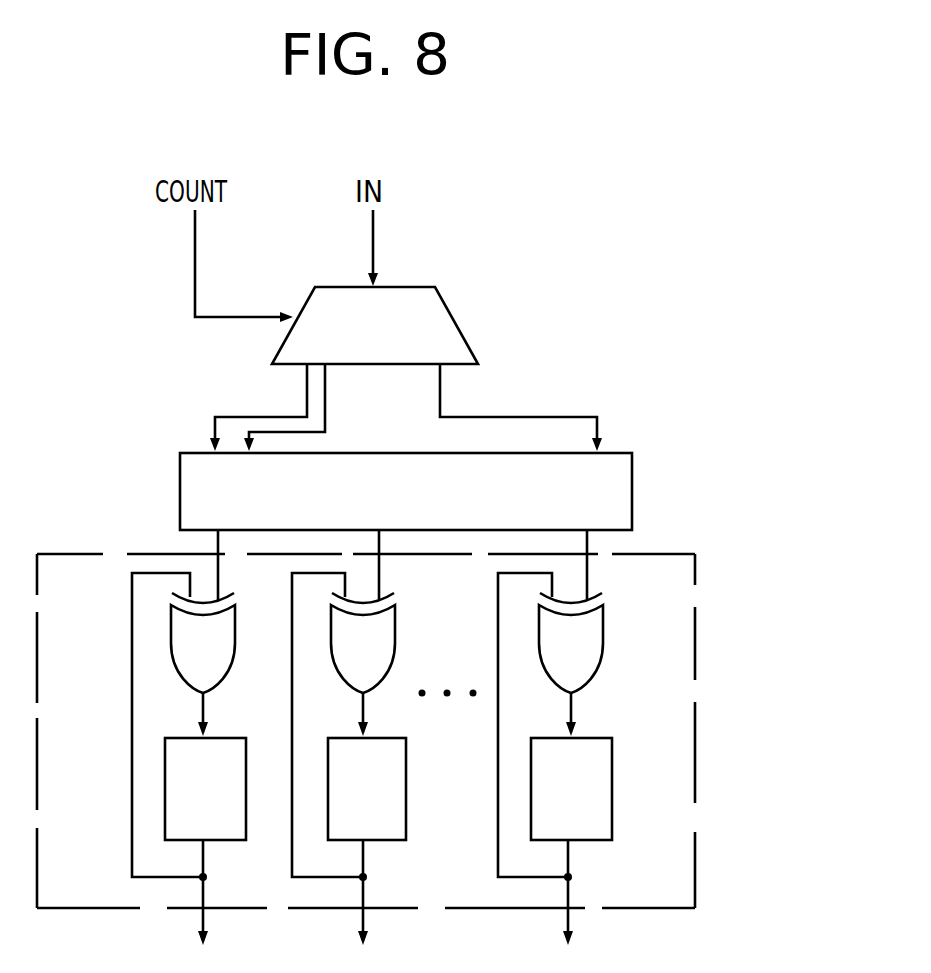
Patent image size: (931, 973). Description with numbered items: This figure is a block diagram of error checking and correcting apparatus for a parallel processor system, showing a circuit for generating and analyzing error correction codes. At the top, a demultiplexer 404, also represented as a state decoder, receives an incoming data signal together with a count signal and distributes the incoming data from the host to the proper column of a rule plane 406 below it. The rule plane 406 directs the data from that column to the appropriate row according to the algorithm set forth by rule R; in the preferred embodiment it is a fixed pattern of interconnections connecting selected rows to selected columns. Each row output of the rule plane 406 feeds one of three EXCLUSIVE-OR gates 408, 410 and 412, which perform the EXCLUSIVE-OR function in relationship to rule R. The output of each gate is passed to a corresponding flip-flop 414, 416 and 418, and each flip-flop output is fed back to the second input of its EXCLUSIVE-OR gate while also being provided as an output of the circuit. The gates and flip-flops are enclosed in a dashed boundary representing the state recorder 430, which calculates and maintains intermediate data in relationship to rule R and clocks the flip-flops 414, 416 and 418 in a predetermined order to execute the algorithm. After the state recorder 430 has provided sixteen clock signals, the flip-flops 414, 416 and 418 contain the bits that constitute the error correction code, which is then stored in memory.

The demultiplexer 404 is at (450, 335).
The rule plane 406 is at (622, 492).
The EXCLUSIVE-OR gate 408 is at (223, 655).
The EXCLUSIVE-OR gate 410 is at (390, 650).
The EXCLUSIVE-OR gate 412 is at (598, 650).
The flip-flop 414 is at (223, 748).
The flip-flop 416 is at (407, 798).
The flip-flop 418 is at (607, 802).
The state recorder 430 is at (693, 738).